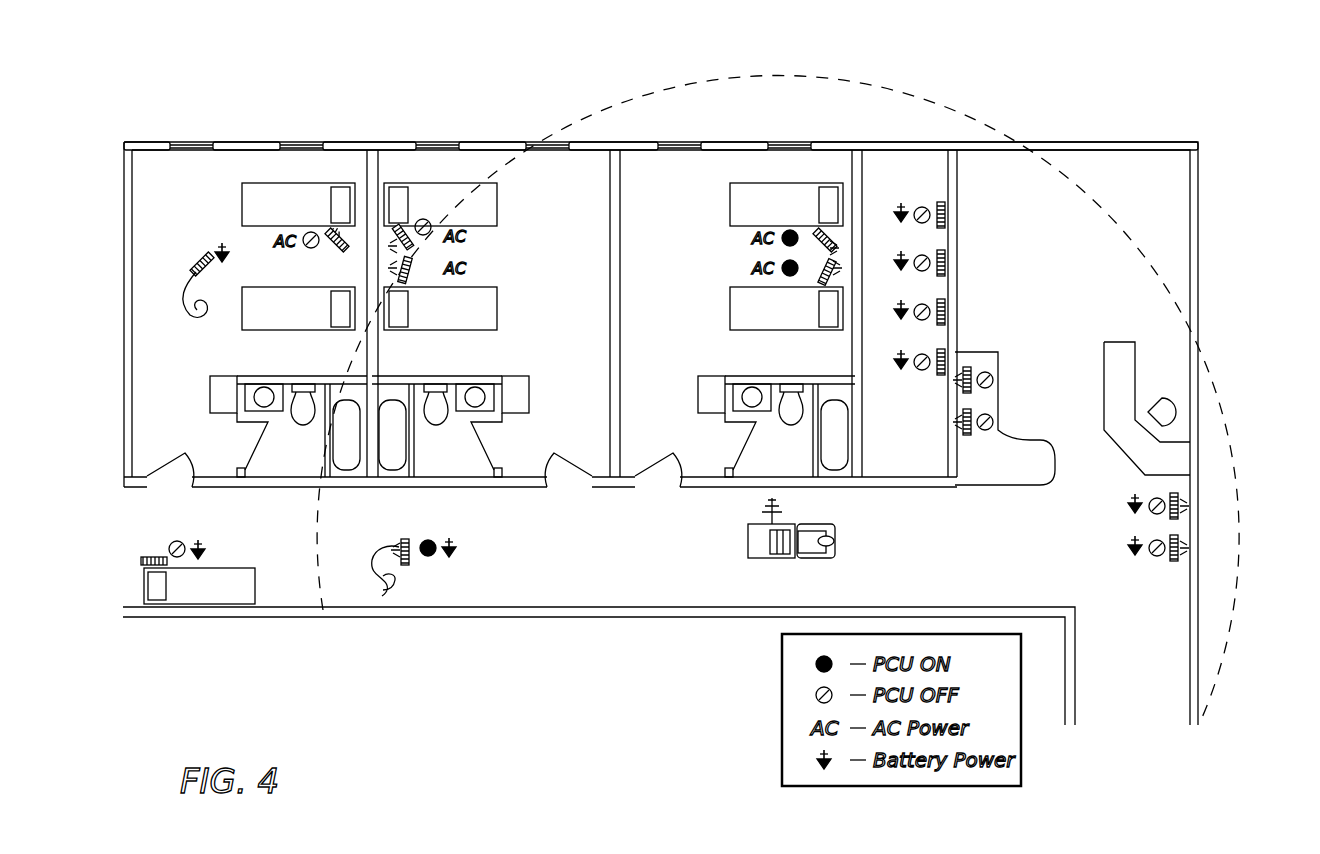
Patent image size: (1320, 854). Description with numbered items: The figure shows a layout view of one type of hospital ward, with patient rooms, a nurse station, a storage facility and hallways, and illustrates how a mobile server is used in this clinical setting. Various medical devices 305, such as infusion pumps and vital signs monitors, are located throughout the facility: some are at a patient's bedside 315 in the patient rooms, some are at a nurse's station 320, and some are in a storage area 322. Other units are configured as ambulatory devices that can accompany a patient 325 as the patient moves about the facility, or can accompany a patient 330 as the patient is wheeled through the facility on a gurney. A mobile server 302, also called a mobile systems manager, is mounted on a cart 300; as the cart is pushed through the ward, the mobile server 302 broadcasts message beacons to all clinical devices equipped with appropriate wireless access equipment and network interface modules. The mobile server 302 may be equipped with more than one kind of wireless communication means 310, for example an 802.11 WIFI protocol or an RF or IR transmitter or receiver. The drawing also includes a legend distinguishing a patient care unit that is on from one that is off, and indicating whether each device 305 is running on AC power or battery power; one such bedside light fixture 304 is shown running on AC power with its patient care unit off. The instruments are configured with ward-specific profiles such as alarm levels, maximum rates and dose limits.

The cart 300 is at (748, 540).
The mobile server 302 is at (773, 553).
The light fixture 304 is at (330, 248).
The medical devices 305 is at (195, 262).
The wireless communication means 310 is at (785, 520).
The patient's bedside 315 is at (183, 163).
The nurse's station 320 is at (1158, 203).
The storage area 322 is at (878, 160).
The patient 325 is at (385, 598).
The patient 330 is at (205, 588).